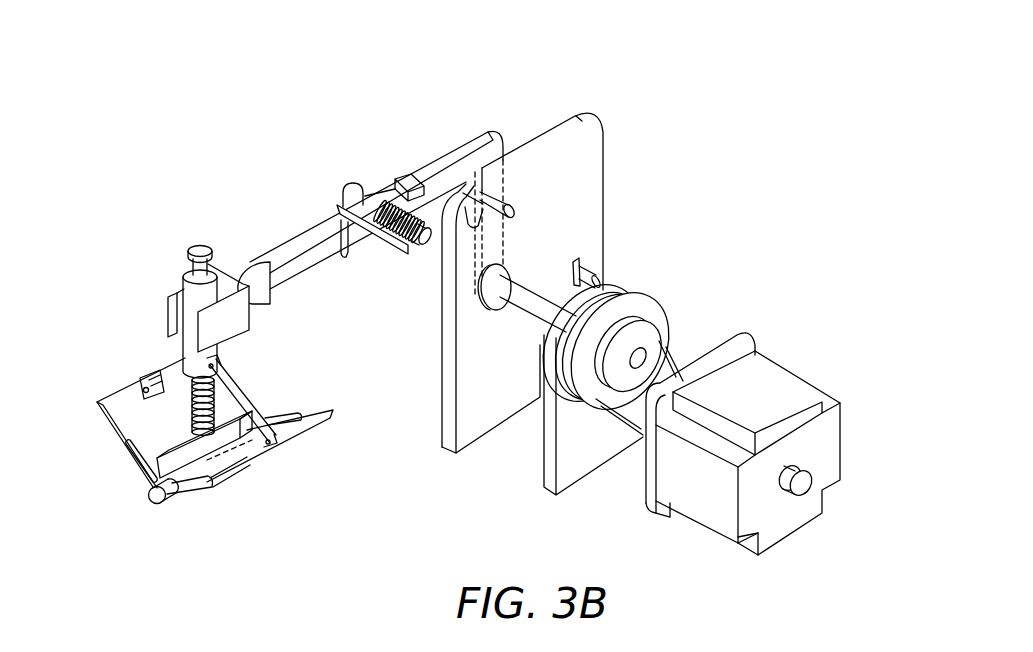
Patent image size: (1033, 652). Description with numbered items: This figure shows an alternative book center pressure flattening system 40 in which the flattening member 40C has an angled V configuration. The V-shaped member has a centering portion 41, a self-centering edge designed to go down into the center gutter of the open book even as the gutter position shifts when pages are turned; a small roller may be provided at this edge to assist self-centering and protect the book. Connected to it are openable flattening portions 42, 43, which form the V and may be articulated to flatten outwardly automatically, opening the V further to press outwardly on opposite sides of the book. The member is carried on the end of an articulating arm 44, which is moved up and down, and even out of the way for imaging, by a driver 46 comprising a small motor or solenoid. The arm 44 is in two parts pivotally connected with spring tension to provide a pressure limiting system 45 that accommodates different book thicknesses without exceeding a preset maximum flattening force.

The book center pressure flattening system 40 is at (652, 112).
The alternative flattening member 40C is at (142, 477).
The centering portion 41 is at (163, 517).
The flattening portion 42 is at (120, 393).
The flattening portion 43 is at (250, 460).
The articulating arm 44 is at (313, 243).
The pressure limiting system 45 is at (392, 202).
The driver 46 is at (694, 337).